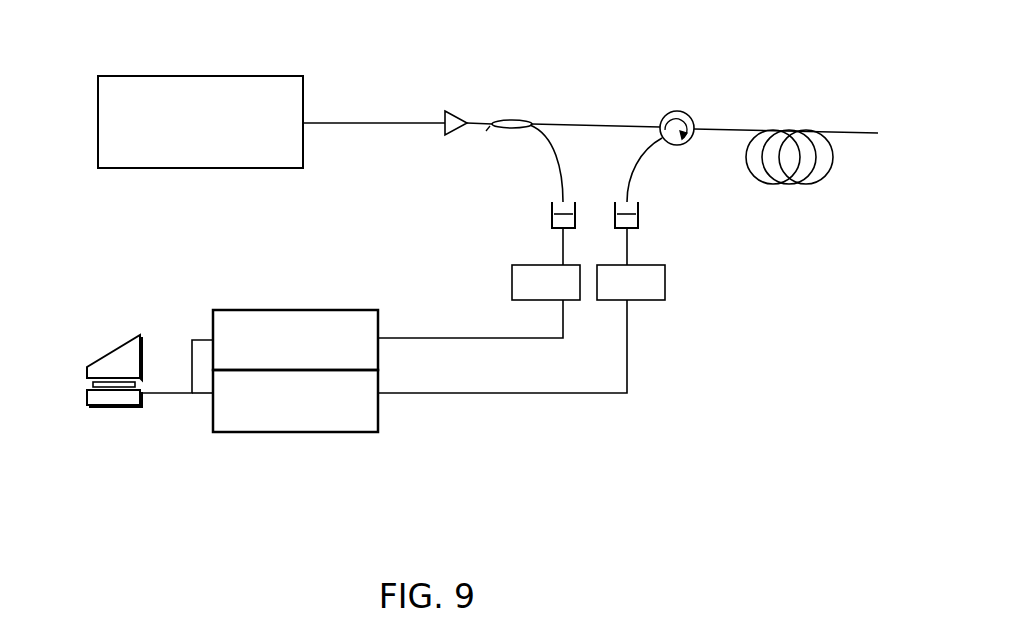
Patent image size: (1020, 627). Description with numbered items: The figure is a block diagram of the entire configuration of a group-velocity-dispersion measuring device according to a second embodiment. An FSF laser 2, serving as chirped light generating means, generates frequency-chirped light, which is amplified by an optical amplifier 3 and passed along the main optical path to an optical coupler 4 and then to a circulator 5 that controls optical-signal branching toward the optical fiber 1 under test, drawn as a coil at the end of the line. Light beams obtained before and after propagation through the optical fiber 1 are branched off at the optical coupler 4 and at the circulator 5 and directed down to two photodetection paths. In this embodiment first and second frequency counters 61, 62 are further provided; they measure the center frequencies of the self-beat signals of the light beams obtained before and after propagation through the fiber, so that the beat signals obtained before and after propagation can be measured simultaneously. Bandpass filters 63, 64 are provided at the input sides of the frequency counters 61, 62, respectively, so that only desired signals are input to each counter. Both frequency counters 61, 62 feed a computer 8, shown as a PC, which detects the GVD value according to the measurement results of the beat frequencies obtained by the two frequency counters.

The optical fiber under test 1 is at (790, 131).
The FSF laser 2 is at (200, 76).
The optical amplifier 3 is at (450, 136).
The optical coupler 4 is at (517, 120).
The circulator 5 is at (666, 114).
The computer 8 is at (123, 342).
The first frequency counter 61 is at (267, 310).
The second frequency counter 62 is at (270, 432).
The bandpass filter 63 is at (512, 274).
The bandpass filter 64 is at (665, 278).